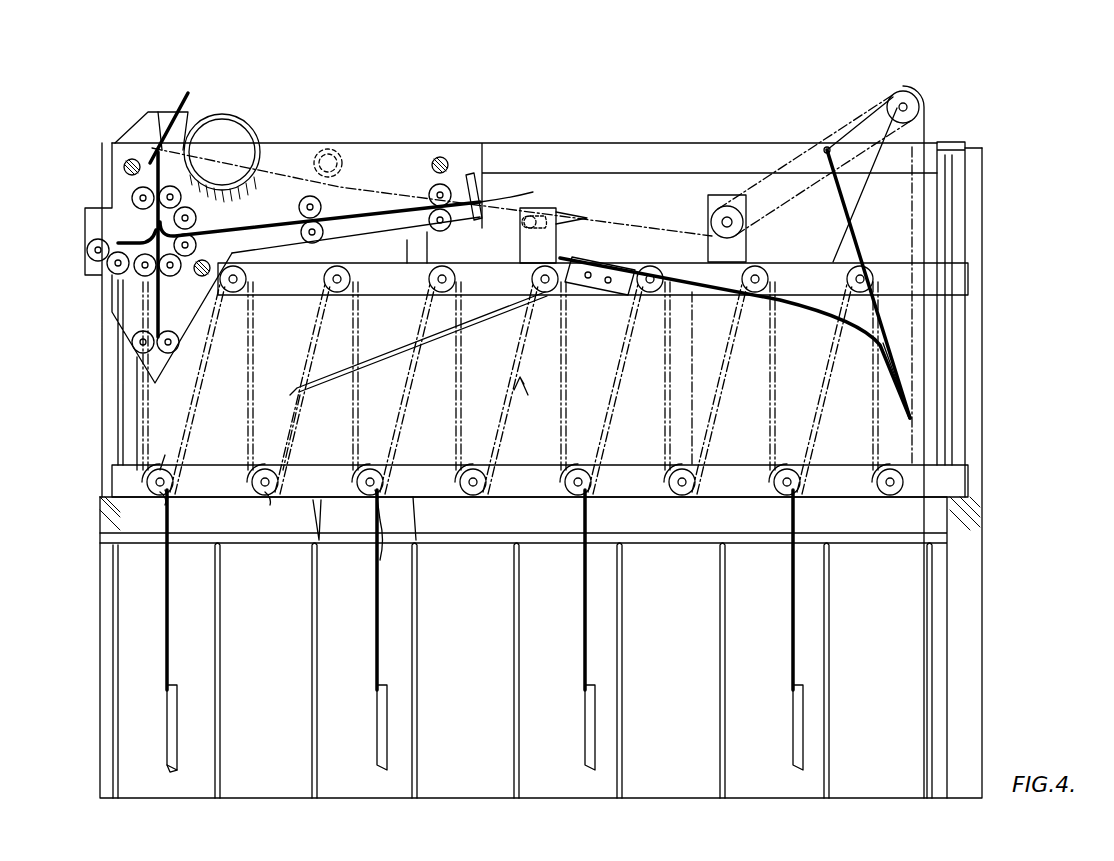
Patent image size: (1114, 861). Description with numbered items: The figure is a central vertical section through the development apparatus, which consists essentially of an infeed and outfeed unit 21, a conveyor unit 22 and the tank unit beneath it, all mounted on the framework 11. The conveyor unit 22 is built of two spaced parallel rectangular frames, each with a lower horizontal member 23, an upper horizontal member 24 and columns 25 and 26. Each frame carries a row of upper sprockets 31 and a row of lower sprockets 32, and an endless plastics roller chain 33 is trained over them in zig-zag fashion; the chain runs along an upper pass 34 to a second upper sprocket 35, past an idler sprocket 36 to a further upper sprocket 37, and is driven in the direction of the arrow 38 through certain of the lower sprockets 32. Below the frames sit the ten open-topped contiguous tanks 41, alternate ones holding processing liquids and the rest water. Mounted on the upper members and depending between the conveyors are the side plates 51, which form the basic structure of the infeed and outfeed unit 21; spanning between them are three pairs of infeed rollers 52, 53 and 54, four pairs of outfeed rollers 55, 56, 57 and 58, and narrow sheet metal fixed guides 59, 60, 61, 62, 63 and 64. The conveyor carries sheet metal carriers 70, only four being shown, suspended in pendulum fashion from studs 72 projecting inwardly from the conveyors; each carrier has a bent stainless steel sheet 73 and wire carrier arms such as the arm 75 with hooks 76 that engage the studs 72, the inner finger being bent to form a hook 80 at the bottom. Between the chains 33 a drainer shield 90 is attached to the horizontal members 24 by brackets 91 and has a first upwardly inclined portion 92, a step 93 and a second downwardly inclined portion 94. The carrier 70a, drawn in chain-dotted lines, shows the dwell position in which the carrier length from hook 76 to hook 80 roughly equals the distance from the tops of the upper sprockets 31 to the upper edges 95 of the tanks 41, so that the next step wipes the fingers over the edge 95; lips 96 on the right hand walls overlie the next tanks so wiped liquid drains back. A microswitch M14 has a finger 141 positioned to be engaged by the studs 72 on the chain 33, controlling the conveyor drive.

The frame 11 is at (983, 428).
The infeed and outfeed unit 21 is at (100, 206).
The conveyor unit 22 is at (93, 437).
The lower horizontal member 23 is at (927, 462).
The upper horizontal member 24 is at (935, 150).
The column 25 is at (955, 332).
The column 26 is at (118, 462).
The upper sprockets 31 is at (447, 267).
The lower sprockets 32 is at (372, 468).
The endless chain 33 is at (455, 424).
The upper pass 34 is at (620, 226).
The second upper sprocket 35 is at (895, 108).
The idler sprocket 36 is at (712, 218).
The second upper sprocket 37 is at (150, 152).
The arrow 38 is at (528, 395).
The tanks 41 is at (258, 715).
The side plates 51 is at (293, 152).
The infeed rollers 52 is at (135, 193).
The infeed rollers 53 is at (114, 272).
The infeed rollers 54 is at (137, 352).
The outfeed rollers 55 is at (435, 192).
The outfeed rollers 56 is at (302, 206).
The outfeed rollers 57 is at (345, 244).
The outfeed rollers 58 is at (90, 252).
The fixed guide 59 is at (118, 245).
The fixed guide 60 is at (222, 158).
The fixed guide 61 is at (235, 160).
The fixed guide 62 is at (135, 338).
The fixed guide 63 is at (328, 232).
The fixed guide 64 is at (386, 252).
The sheet metal carriers 70 is at (160, 739).
The carrier 70a is at (322, 440).
The studs 72 is at (180, 500).
The bent sheet of stainless steel 73 is at (176, 728).
The carrier arm 75 is at (168, 615).
The hooks 76 is at (165, 470).
The hook 80 is at (170, 772).
The drainer shield 90 is at (692, 295).
The brackets 91 is at (610, 290).
The first upwardly inclined portion 92 is at (640, 272).
The step 93 is at (575, 268).
The second downwardly inclined portion 94 is at (500, 360).
The upper edges 95 is at (320, 540).
The lips 96 is at (415, 540).
The finger 141 is at (540, 222).
The microswitch M14 is at (535, 252).